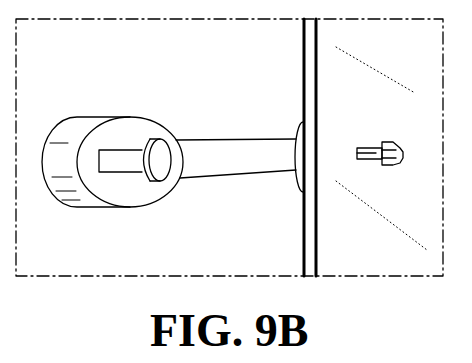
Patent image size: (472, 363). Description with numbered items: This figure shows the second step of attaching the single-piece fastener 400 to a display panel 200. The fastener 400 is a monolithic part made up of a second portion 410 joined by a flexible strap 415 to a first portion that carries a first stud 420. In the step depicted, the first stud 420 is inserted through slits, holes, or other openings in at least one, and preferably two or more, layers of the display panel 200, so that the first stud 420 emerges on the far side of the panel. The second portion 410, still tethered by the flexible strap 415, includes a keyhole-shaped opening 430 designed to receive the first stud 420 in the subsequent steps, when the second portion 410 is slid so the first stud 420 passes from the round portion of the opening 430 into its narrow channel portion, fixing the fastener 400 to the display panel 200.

The display panel 200 is at (410, 268).
The fastener 400 is at (239, 79).
The second portion 410 is at (68, 118).
The flexible strap 415 is at (227, 162).
The first stud 420 is at (383, 141).
The opening 430 is at (122, 163).